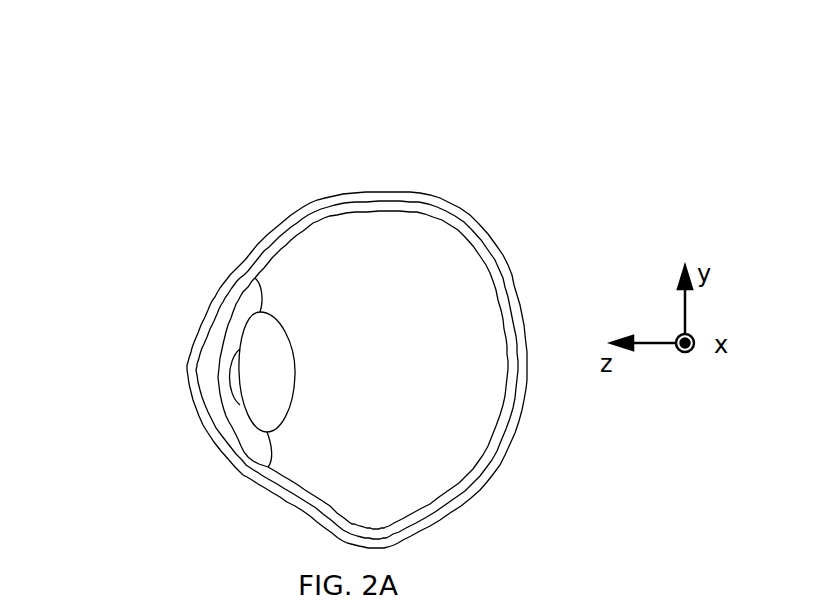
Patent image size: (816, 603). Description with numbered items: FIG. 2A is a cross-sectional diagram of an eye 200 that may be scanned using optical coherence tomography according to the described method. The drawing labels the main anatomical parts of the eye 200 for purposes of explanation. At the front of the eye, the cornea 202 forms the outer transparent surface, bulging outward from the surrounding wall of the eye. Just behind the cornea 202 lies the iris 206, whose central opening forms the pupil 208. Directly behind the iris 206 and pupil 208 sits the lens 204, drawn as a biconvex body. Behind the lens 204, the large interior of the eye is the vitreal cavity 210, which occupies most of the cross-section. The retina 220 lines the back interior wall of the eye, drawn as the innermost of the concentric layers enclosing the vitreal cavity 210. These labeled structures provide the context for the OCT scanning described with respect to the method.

The eye 200 is at (372, 76).
The cornea 202 is at (217, 295).
The lens 204 is at (292, 336).
The iris 206 is at (230, 420).
The pupil 208 is at (230, 377).
The vitreal cavity 210 is at (385, 370).
The retina 220 is at (486, 271).